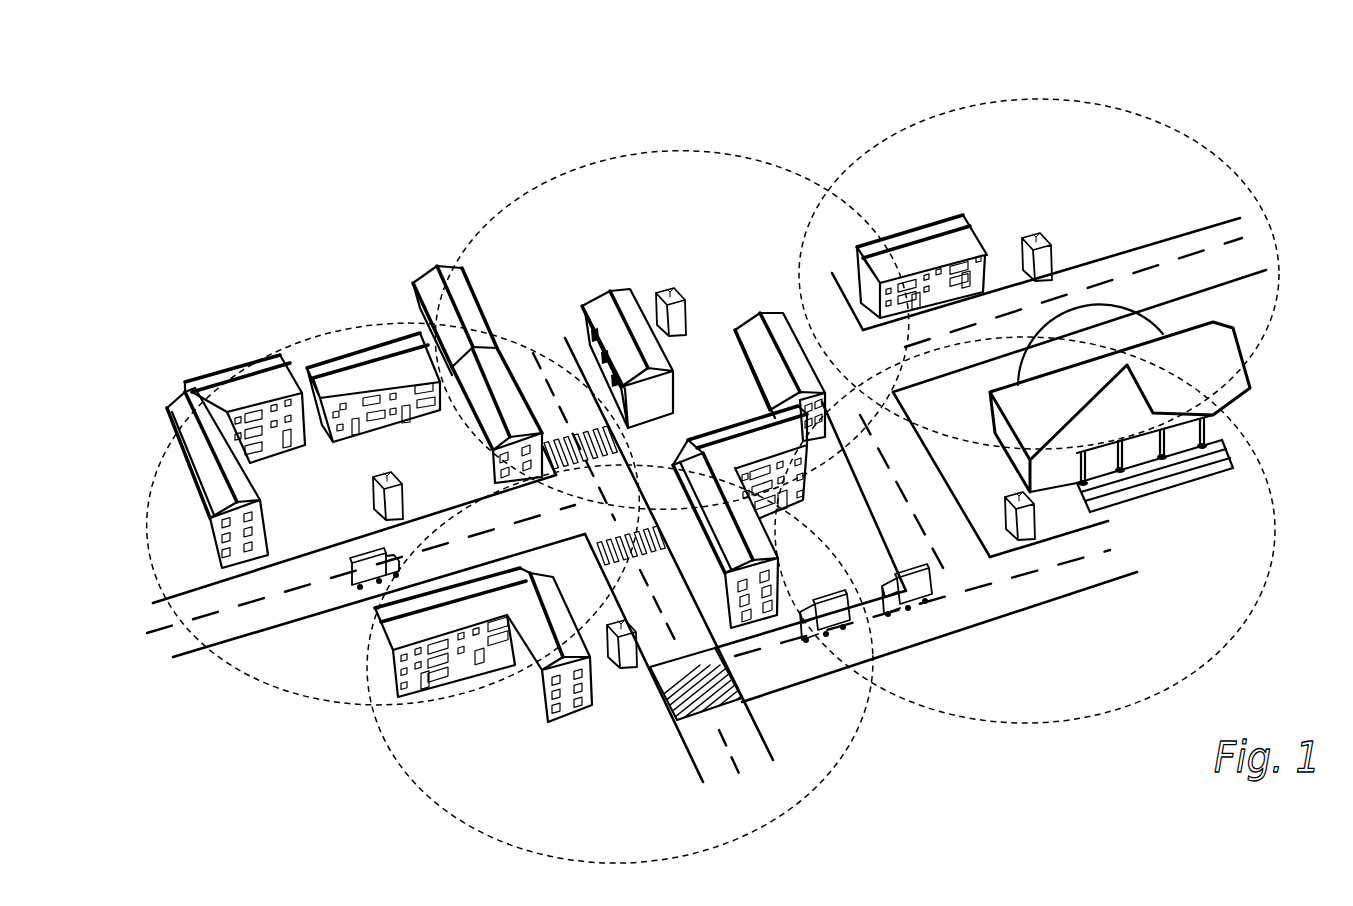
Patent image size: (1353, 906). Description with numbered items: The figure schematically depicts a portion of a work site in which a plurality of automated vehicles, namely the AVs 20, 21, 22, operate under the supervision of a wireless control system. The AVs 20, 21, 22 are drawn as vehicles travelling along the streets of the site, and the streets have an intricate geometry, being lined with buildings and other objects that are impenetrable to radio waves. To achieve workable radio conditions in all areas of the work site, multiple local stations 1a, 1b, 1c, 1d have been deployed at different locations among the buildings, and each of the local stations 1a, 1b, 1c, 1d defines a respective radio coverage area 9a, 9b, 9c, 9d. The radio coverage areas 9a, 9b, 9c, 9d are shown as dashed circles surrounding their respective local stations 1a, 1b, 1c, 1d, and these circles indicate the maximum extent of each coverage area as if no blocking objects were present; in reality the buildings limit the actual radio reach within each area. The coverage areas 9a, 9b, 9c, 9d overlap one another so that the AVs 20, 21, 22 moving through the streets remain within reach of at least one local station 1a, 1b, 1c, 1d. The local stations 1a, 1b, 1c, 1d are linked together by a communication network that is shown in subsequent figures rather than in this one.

The local station 1a is at (390, 476).
The local station 1b is at (622, 667).
The local station 1c is at (1020, 498).
The local station 1d is at (1037, 238).
The radio coverage area 9a is at (337, 701).
The radio coverage area 9b is at (440, 804).
The radio coverage area 9c is at (987, 721).
The radio coverage area 9d is at (1108, 107).
The AV 20 is at (370, 578).
The AV 21 is at (818, 607).
The AV 22 is at (887, 580).